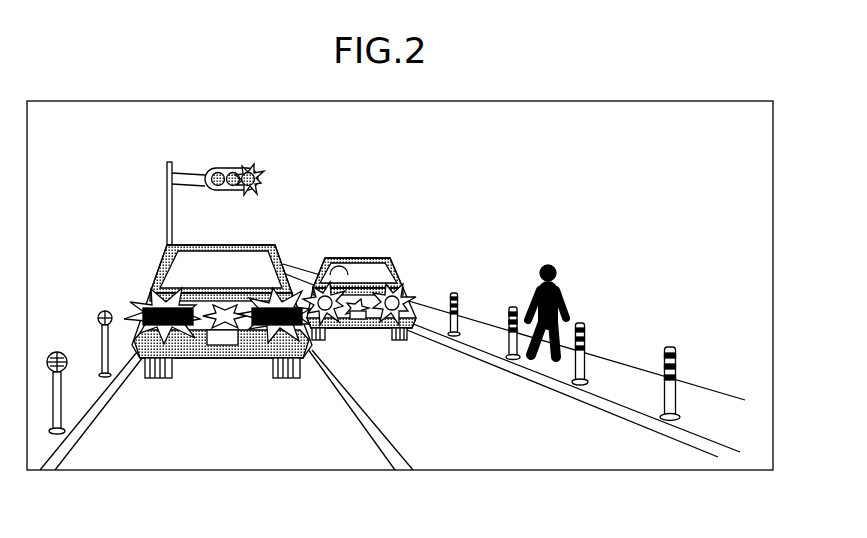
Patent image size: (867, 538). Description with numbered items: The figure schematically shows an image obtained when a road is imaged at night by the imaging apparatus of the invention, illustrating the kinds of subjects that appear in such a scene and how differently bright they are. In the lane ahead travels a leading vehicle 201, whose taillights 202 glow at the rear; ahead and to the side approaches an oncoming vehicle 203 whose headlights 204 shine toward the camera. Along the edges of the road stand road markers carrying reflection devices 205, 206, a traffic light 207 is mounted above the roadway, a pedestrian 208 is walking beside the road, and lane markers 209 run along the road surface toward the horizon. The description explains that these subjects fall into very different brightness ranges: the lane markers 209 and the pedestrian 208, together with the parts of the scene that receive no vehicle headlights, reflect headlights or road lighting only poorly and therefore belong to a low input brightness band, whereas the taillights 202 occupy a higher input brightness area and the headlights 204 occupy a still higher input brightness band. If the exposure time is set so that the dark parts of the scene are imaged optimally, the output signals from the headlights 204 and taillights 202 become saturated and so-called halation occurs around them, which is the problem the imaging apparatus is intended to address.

The leading vehicle 201 is at (224, 297).
The taillights 202 is at (181, 328).
The oncoming vehicle 203 is at (377, 297).
The headlights 204 is at (378, 327).
The reflection device 205 is at (58, 403).
The reflection device 206 is at (677, 400).
The traffic light 207 is at (215, 191).
The pedestrian 208 is at (565, 293).
The lane markers 209 is at (367, 435).